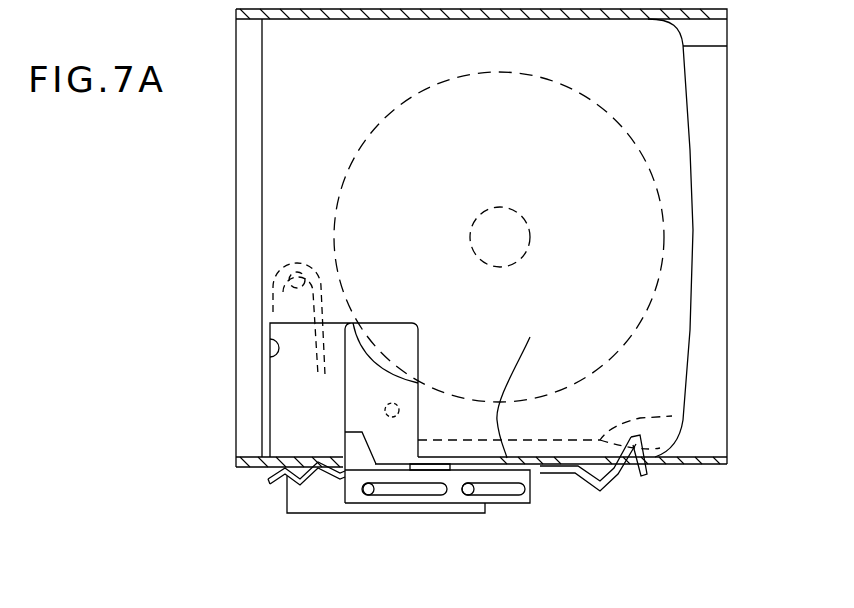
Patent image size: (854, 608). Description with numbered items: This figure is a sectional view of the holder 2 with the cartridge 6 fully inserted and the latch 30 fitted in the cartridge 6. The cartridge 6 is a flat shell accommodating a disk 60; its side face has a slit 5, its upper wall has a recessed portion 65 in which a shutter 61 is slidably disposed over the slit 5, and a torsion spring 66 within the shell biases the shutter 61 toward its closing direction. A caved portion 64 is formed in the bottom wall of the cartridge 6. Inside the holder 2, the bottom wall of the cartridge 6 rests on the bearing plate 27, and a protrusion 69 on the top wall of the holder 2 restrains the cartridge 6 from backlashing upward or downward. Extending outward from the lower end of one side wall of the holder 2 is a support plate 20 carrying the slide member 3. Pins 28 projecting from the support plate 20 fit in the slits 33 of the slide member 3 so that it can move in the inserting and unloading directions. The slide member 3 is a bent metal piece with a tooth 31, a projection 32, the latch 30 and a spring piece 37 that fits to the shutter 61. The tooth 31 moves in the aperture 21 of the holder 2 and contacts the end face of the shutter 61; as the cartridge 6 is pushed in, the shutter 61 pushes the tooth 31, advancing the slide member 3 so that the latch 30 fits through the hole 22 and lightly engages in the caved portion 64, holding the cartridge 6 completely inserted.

The holder 2 is at (701, 466).
The slide member 3 is at (488, 476).
The slit 5 is at (660, 448).
The cartridge 6 is at (672, 290).
The support plate 20 is at (327, 503).
The aperture 21 is at (515, 384).
The hole 22 is at (613, 470).
The bearing plate 27 is at (700, 35).
The pin 28 is at (368, 496).
The latch 30 is at (634, 477).
The tooth 31 is at (352, 441).
The projection 32 is at (432, 472).
The slit 33 is at (388, 480).
The spring piece 37 is at (282, 484).
The disk 60 is at (650, 170).
The shutter 61 is at (292, 412).
The caved portion 64 is at (693, 407).
The recessed portion 65 is at (276, 352).
The torsion spring 66 is at (282, 278).
The protrusion 69 is at (405, 405).